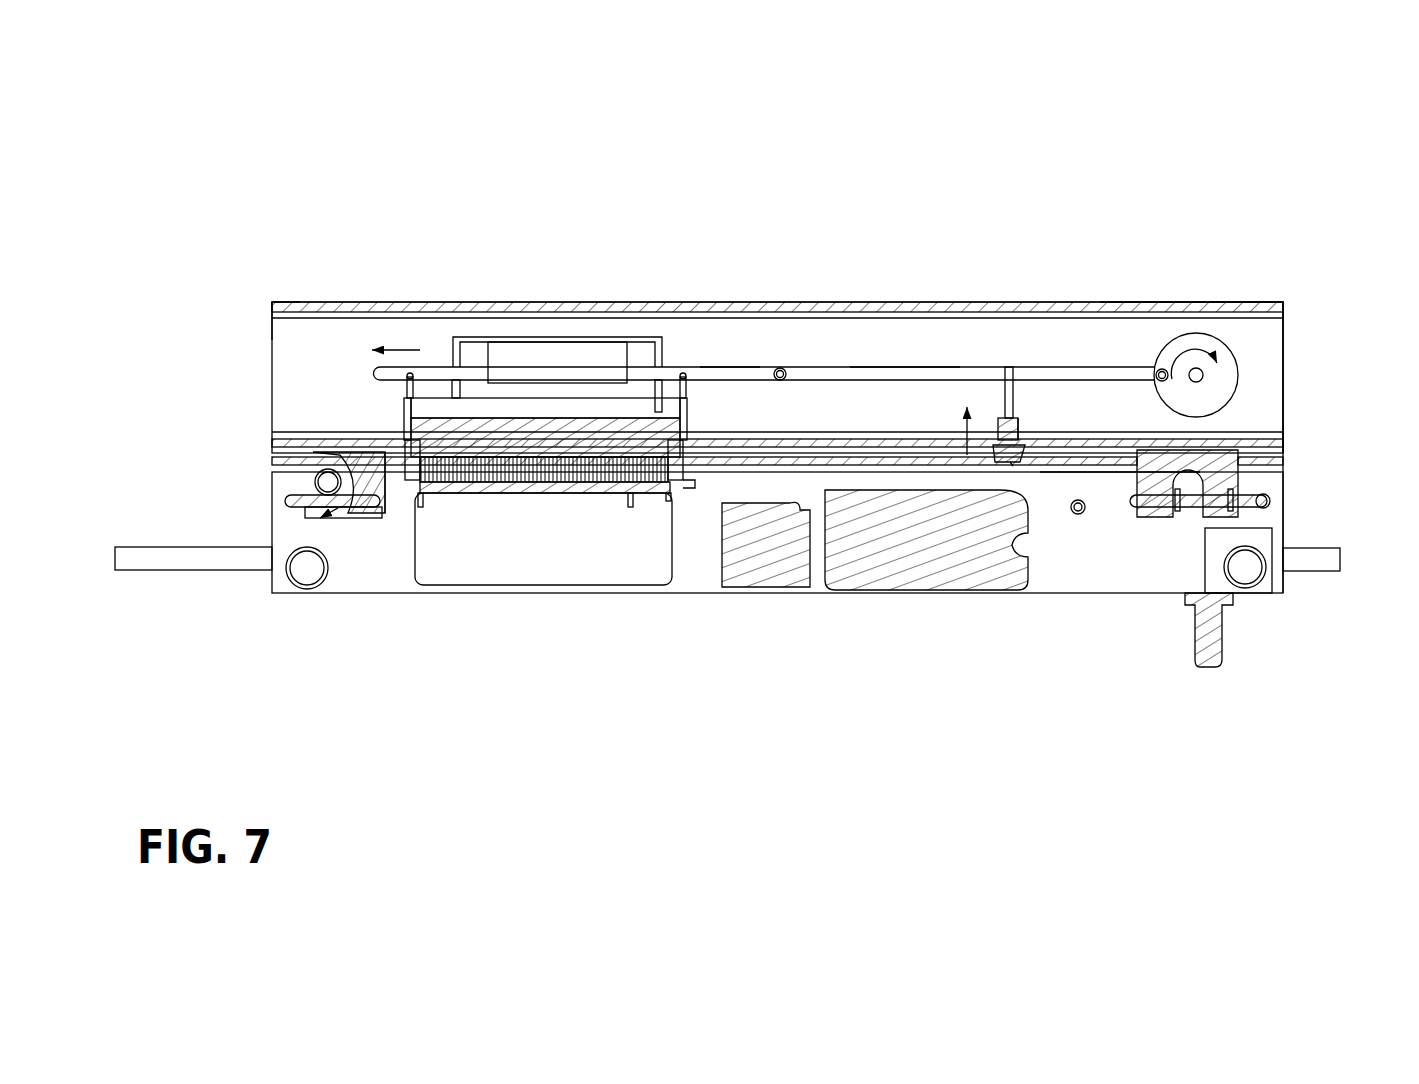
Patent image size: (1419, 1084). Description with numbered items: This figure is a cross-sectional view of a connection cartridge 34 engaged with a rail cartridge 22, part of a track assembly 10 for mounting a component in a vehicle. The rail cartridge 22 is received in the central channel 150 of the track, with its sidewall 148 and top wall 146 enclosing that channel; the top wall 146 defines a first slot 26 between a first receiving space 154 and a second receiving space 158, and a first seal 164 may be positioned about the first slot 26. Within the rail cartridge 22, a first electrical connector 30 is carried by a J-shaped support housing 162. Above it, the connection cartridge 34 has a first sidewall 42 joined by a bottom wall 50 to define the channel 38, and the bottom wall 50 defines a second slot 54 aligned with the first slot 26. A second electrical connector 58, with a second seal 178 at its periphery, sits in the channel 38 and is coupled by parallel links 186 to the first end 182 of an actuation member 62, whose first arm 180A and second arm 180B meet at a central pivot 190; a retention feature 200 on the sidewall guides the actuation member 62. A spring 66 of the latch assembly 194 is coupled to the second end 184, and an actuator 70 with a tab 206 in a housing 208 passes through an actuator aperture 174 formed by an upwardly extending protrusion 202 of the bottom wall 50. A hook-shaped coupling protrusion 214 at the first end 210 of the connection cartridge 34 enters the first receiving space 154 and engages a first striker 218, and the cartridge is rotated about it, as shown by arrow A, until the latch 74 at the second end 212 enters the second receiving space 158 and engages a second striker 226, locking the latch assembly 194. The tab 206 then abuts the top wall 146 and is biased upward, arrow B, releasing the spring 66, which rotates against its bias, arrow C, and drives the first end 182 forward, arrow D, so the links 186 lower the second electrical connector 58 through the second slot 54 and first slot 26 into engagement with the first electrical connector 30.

The track assembly 10 is at (1170, 226).
The rail cartridge 22 is at (1278, 463).
The first slot 26 is at (407, 484).
The first electrical connector 30 is at (503, 490).
The connection cartridge 34 is at (770, 302).
The channel 38 is at (1254, 333).
The first sidewall 42 is at (293, 373).
The bottom wall 50 is at (1215, 447).
The second slot 54 is at (670, 480).
The second electrical connector 58 is at (443, 433).
The actuation member 62 is at (933, 370).
The spring 66 is at (1197, 343).
The actuator 70 is at (1030, 428).
The latch 74 is at (1215, 480).
The top wall 146 is at (817, 463).
The sidewall 148 is at (320, 575).
The central channel 150 is at (293, 533).
The first receiving space 154 is at (320, 488).
The second receiving space 158 is at (1118, 476).
The support housing 162 is at (543, 543).
The first seal 164 is at (676, 470).
The actuator aperture 174 is at (1018, 465).
The second seal 178 is at (708, 485).
The first arm 180A is at (728, 370).
The second arm 180B is at (882, 367).
The first end 182 is at (372, 372).
The second end 184 is at (1160, 372).
The links 186 is at (411, 375).
The central pivot 190 is at (788, 370).
The latch assembly 194 is at (1260, 482).
The retention feature 200 is at (547, 362).
The upwardly extending protrusion 202 is at (998, 430).
The tab 206 is at (1012, 466).
The housing 208 is at (997, 466).
The first end 210 is at (270, 333).
The second end 212 is at (1285, 367).
The coupling protrusion 214 is at (383, 478).
The first striker 218 is at (298, 474).
The second striker 226 is at (1233, 507).
The arrow A is at (352, 512).
The arrow B is at (960, 433).
The arrow C is at (1172, 363).
The arrow D is at (393, 348).